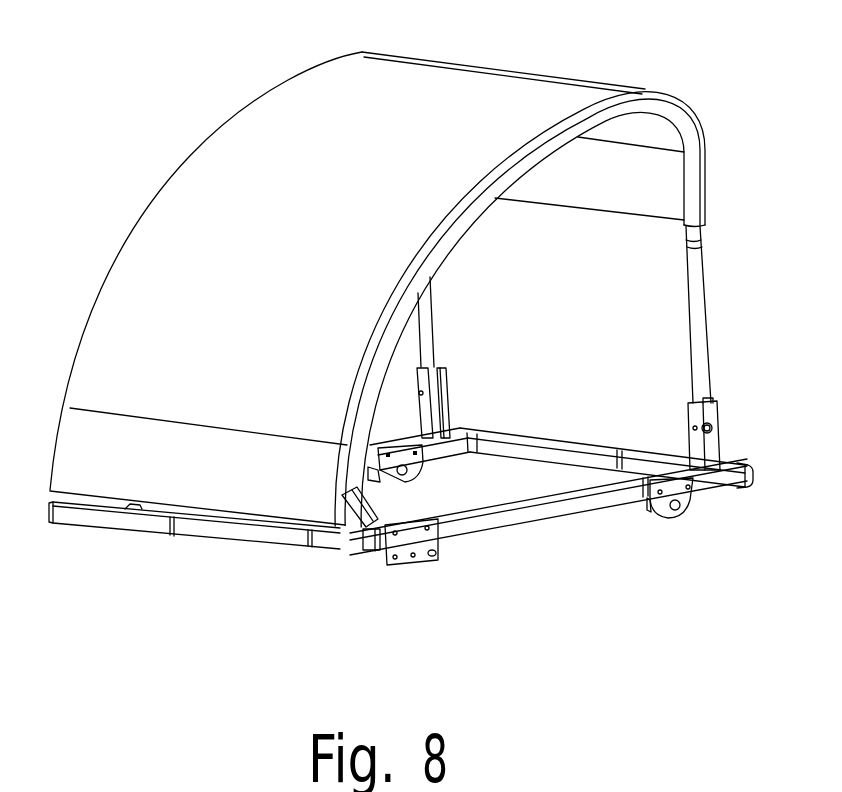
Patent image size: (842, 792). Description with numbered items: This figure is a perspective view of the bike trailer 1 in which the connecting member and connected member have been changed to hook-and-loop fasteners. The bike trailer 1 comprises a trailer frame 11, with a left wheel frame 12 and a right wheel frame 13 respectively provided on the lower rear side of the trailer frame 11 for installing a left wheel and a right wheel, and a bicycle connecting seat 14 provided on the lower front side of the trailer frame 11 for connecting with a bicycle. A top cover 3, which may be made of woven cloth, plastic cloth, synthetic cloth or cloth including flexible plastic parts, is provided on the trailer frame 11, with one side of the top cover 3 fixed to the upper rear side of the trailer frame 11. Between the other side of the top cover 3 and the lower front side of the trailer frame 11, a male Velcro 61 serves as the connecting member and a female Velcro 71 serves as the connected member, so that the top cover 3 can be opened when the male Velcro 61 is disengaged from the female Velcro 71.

The bike trailer 1 is at (401, 537).
The top cover 3 is at (215, 172).
The trailer frame 11 is at (212, 535).
The left wheel frame 12 is at (402, 448).
The right wheel frame 13 is at (693, 492).
The bicycle connecting seat 14 is at (422, 563).
The male Velcro 61 is at (363, 533).
The female Velcro 71 is at (370, 540).